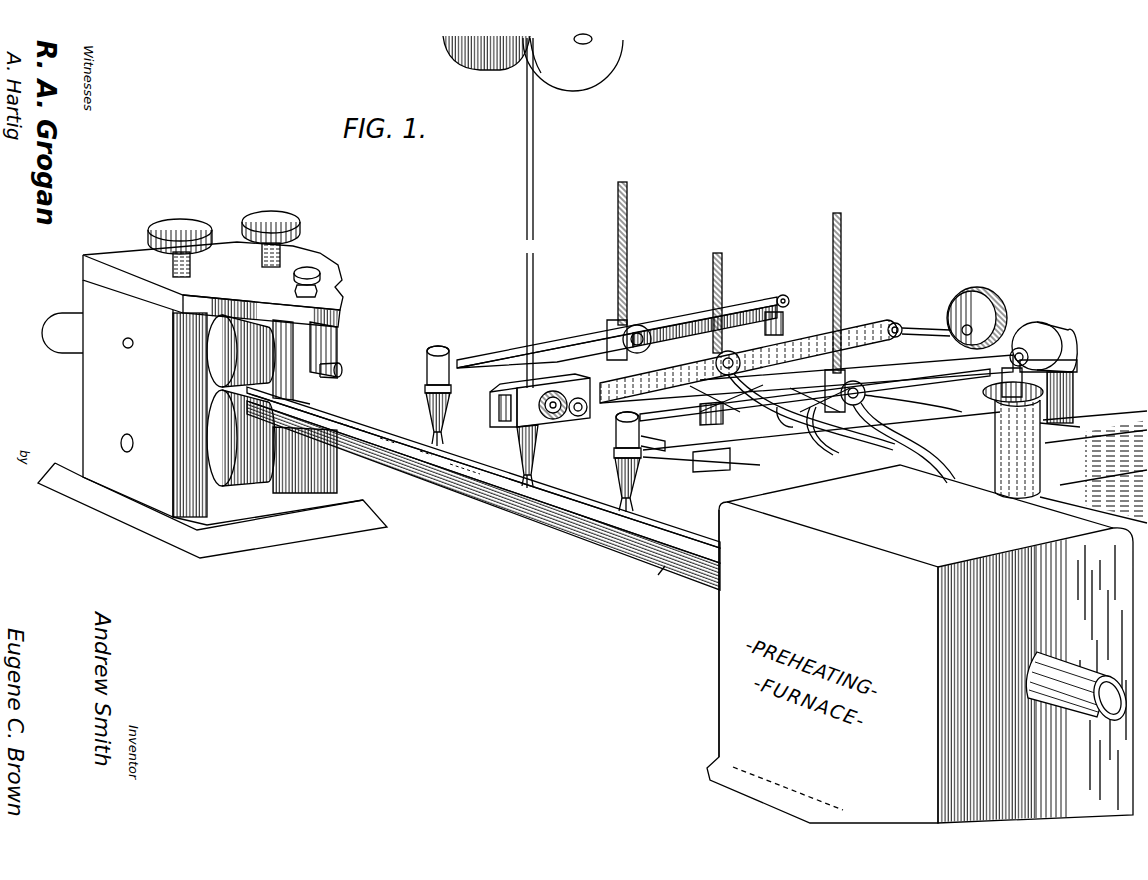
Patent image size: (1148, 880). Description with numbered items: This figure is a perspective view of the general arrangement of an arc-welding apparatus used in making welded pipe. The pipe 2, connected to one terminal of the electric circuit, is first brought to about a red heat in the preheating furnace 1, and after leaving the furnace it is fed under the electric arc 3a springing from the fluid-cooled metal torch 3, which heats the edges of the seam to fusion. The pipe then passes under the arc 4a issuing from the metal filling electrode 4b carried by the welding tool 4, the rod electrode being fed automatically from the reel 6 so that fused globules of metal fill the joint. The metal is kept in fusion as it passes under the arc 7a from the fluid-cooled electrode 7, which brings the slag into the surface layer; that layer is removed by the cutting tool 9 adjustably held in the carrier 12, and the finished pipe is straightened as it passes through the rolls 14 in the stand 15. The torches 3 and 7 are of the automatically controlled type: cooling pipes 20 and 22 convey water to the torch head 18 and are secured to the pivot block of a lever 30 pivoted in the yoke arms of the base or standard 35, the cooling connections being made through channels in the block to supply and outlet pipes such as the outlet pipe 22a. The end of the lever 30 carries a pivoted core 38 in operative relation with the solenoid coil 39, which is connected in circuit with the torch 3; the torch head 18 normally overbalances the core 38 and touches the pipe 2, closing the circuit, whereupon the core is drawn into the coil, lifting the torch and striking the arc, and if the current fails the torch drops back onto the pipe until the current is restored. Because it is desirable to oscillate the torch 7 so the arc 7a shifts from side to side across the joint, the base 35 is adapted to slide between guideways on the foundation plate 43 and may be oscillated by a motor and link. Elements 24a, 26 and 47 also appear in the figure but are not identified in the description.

The preheating furnace 1 is at (720, 594).
The pipe 2 is at (1112, 680).
The fluid-cooled metal torch 3 is at (614, 476).
The electric arc 3a is at (636, 503).
The welding tool 4 is at (520, 437).
The arc 4a is at (537, 476).
The metal filling electrode 4b is at (533, 308).
The reel 6 is at (598, 72).
The fluid-cooled electrode 7 is at (430, 411).
The arc 7a is at (443, 436).
The cutting tool 9 is at (320, 393).
The carrier 12 is at (340, 343).
The rolls 14 is at (227, 360).
The stand 15 is at (93, 405).
The torch head 18 is at (430, 371).
The cooling pipe 20 is at (492, 357).
The cooling pipe 22 is at (492, 392).
The outlet pipe 22a is at (613, 358).
The curved support arm 24a is at (811, 414).
The vertical adjusting rods 26 is at (628, 320).
The lever 30 is at (690, 312).
The base or standard 35 is at (960, 470).
The pivoted core 38 is at (791, 320).
The solenoid coil 39 is at (1030, 460).
The foundation plate 43 is at (653, 455).
The support block 47 is at (700, 465).